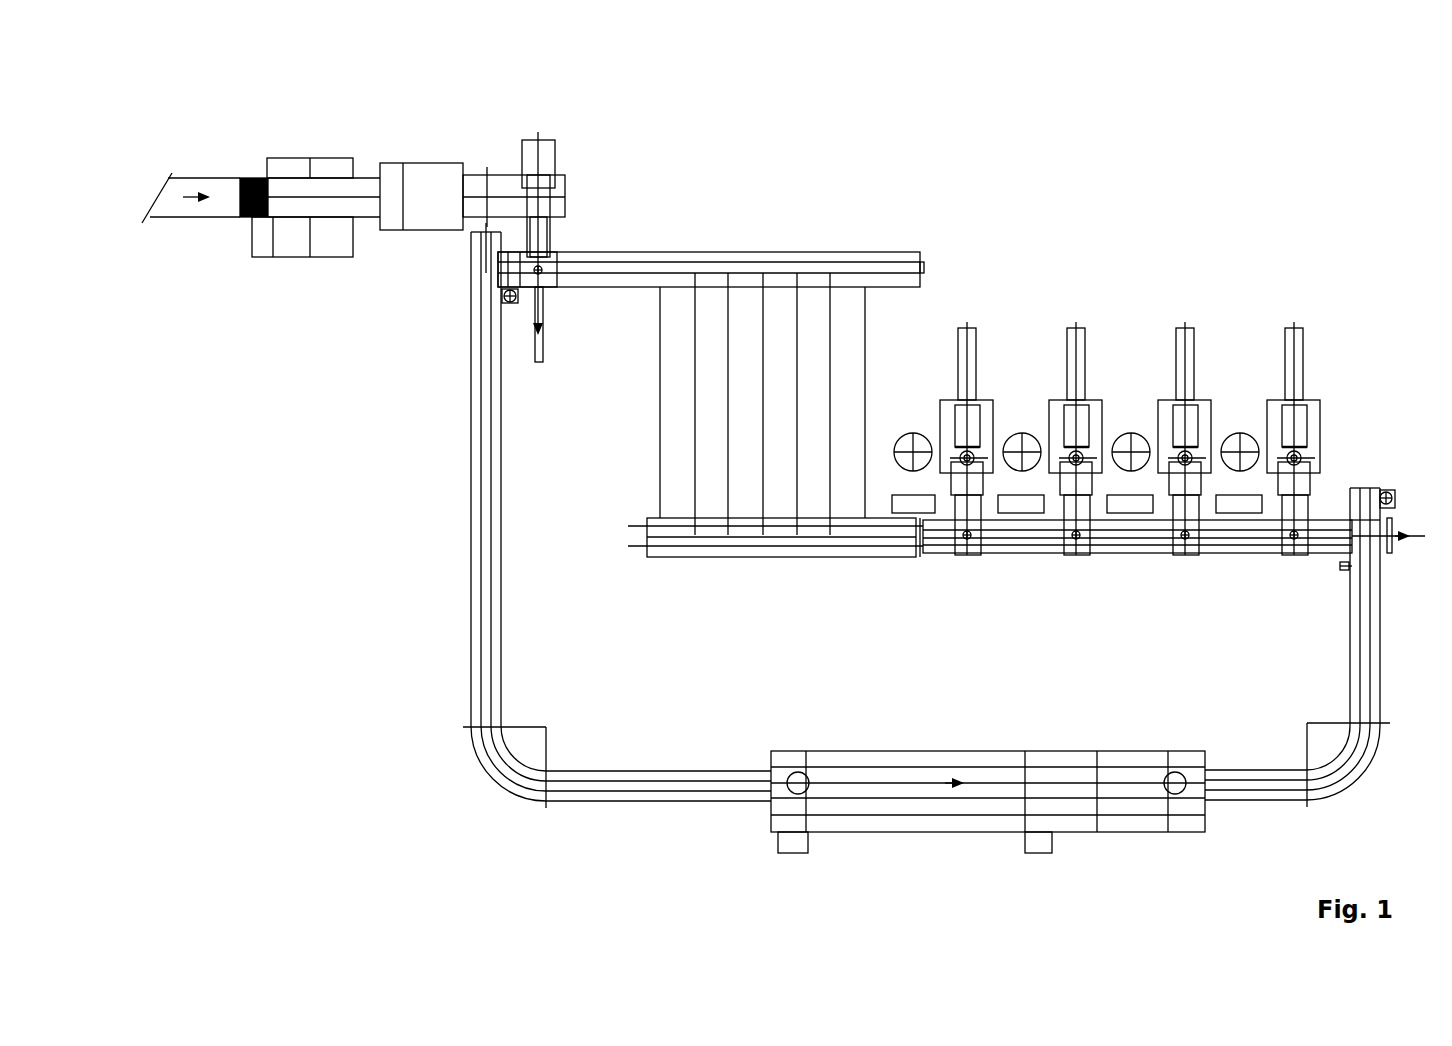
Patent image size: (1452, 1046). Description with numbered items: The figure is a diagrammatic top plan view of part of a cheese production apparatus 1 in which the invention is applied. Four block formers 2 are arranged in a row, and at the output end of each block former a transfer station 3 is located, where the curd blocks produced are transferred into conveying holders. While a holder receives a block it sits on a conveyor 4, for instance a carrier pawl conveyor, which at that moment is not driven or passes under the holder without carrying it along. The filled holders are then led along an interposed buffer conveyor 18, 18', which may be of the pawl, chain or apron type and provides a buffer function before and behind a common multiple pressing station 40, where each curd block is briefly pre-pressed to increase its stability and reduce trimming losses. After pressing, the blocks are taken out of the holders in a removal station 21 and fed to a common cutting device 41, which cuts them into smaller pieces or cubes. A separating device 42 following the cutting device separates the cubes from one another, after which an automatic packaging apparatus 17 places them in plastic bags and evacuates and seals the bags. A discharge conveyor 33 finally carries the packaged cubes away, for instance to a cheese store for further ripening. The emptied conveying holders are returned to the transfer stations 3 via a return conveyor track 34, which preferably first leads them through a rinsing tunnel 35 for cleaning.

The cheese production apparatus 1 is at (1382, 393).
The block former 2 is at (970, 453).
The transfer station 3 is at (965, 540).
The conveyor 4 is at (1025, 543).
The automatic packaging apparatus 17 is at (299, 142).
The buffer conveyor 18 is at (775, 568).
The buffer conveyor 18' is at (711, 227).
The removal station 21 is at (572, 148).
The discharge conveyor 33 is at (200, 232).
The return conveyor track 34 is at (1347, 773).
The rinsing tunnel 35 is at (1120, 762).
The pressing station 40 is at (712, 429).
The cutting device 41 is at (436, 190).
The separating device 42 is at (389, 162).